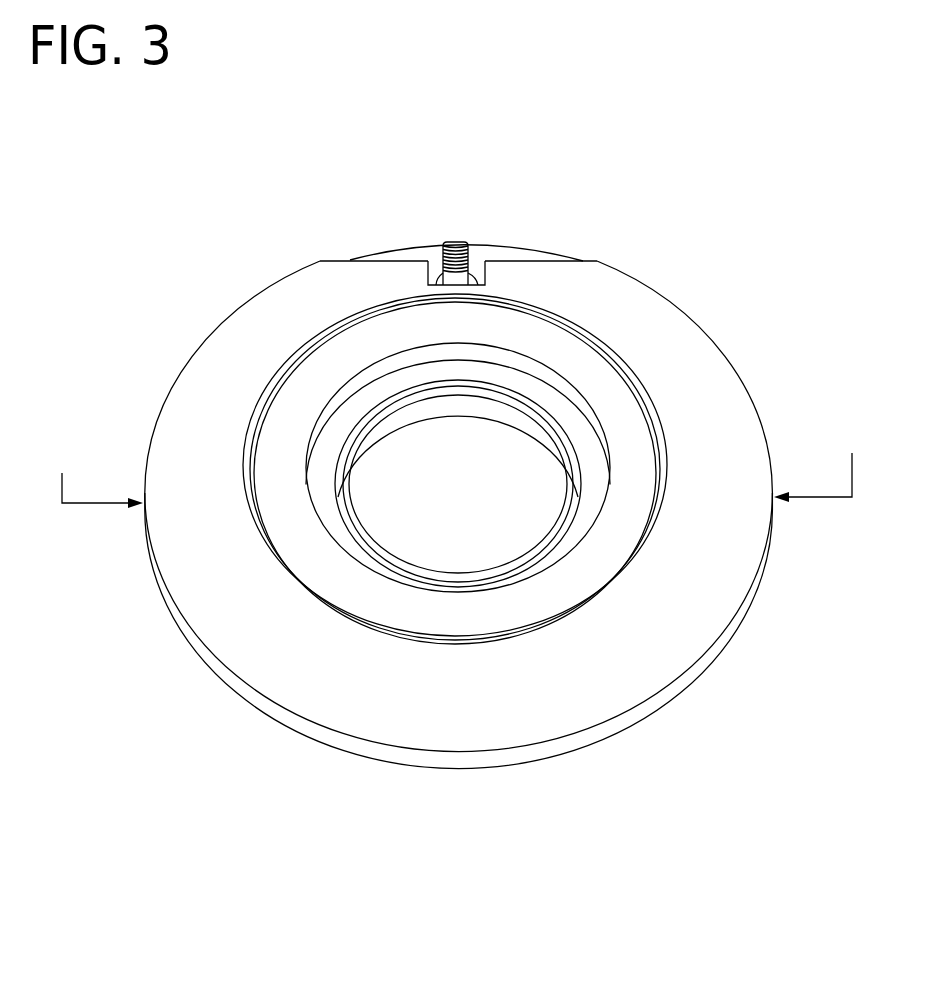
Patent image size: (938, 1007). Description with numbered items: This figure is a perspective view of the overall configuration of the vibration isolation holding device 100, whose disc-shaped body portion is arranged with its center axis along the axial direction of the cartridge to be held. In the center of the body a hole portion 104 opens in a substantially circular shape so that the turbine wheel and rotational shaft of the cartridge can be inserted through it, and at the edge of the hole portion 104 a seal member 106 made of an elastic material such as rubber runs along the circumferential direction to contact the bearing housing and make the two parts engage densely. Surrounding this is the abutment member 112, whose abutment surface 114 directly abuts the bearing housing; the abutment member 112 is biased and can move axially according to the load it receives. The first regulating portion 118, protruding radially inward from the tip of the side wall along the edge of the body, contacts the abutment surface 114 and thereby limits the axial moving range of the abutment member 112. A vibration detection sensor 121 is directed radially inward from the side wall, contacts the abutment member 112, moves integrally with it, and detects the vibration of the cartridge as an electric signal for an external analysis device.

The vibration isolation holding device 100 is at (716, 233).
The hole portion 104 is at (433, 510).
The seal member 106 is at (433, 378).
The abutment member 112 is at (463, 615).
The abutment surface 114 is at (455, 583).
The first regulating portion 118 is at (278, 685).
The vibration detection sensor 121 is at (454, 240).